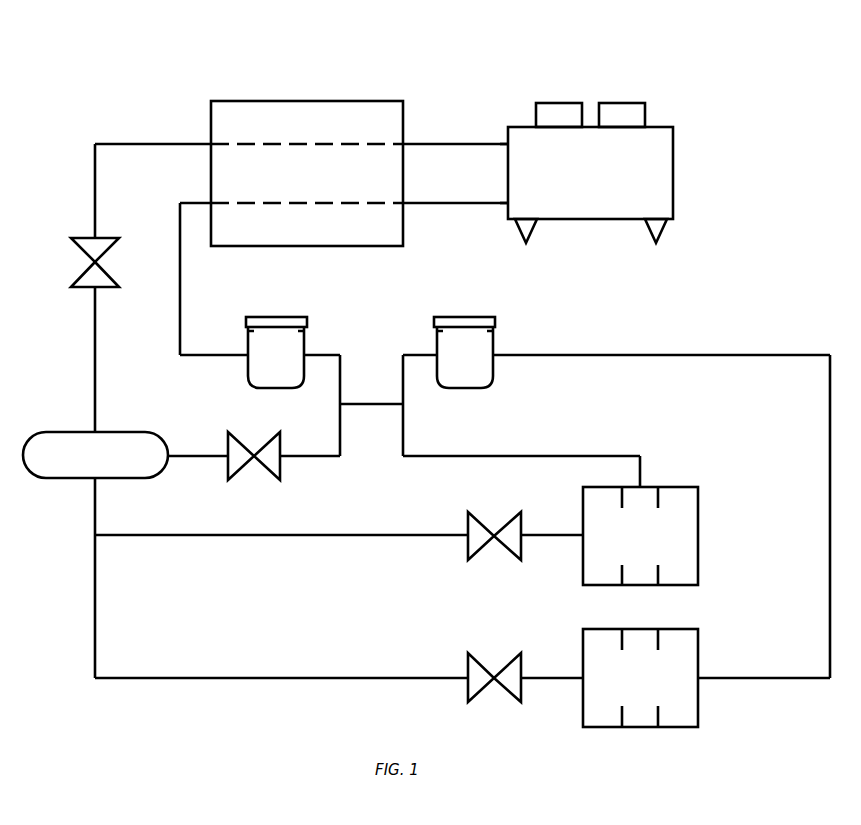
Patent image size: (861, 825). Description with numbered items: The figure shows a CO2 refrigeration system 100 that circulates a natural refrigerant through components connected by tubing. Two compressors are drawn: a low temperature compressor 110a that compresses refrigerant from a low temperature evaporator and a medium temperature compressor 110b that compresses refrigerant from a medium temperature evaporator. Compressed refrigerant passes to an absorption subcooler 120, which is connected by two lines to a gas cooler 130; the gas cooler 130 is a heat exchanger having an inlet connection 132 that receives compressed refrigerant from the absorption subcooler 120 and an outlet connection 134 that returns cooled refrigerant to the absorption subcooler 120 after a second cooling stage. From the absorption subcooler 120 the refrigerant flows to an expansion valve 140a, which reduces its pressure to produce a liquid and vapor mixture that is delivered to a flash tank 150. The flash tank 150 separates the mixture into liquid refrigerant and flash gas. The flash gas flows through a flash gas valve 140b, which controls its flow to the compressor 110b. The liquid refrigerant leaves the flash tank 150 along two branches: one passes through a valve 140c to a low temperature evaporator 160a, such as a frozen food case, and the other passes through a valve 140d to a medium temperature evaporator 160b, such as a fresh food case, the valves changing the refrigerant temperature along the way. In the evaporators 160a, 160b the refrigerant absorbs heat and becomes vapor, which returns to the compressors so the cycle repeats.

The refrigeration system 100 is at (738, 32).
The compressor 110a is at (468, 317).
The compressor 110b is at (280, 317).
The absorption subcooler 120 is at (332, 101).
The gas cooler 130 is at (673, 172).
The inlet connection 132 is at (516, 201).
The outlet connection 134 is at (502, 137).
The expansion valve 140a is at (100, 288).
The flash gas valve 140b is at (240, 470).
The valve 140c is at (478, 694).
The valve 140d is at (478, 552).
The flash tank 150 is at (125, 432).
The evaporator 160a is at (698, 650).
The evaporator 160b is at (698, 510).